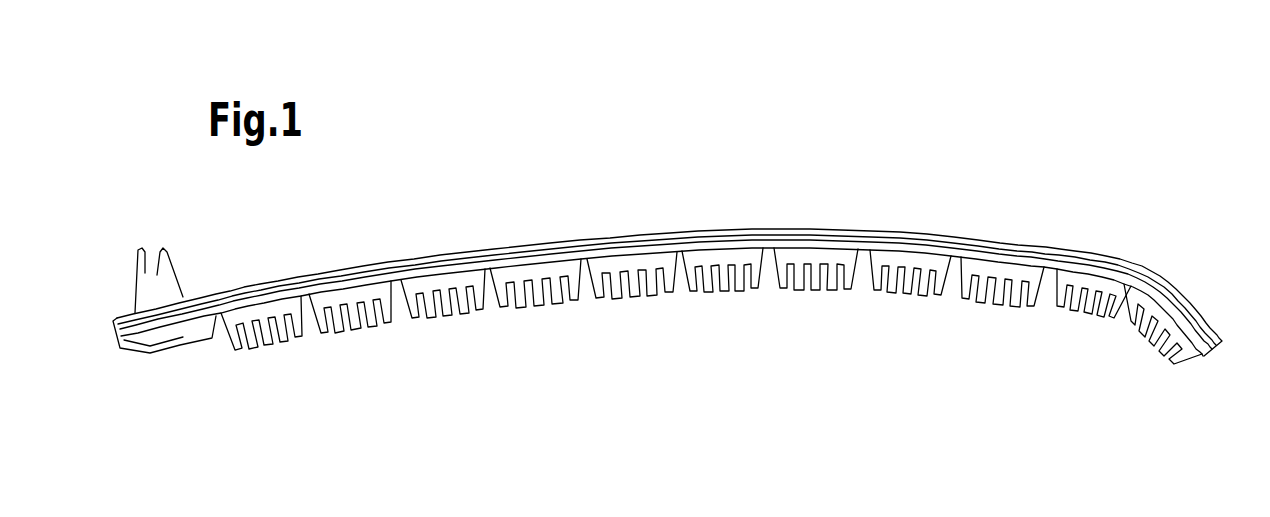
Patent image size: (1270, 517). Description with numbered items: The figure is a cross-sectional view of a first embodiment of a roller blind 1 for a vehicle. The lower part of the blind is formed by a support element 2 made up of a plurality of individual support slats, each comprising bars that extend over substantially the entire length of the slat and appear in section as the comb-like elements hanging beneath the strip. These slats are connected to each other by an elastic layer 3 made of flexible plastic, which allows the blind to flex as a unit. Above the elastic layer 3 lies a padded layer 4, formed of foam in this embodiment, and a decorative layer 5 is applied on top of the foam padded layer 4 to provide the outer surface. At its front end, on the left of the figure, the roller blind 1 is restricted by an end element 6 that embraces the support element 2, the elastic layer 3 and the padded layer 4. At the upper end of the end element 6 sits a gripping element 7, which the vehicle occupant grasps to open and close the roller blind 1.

The roller blind 1 is at (641, 197).
The support element 2 is at (487, 304).
The elastic layer 3 is at (1015, 252).
The padded layer 4 is at (913, 243).
The decorative layer 5 is at (811, 236).
The end element 6 is at (117, 338).
The gripping element 7 is at (134, 266).